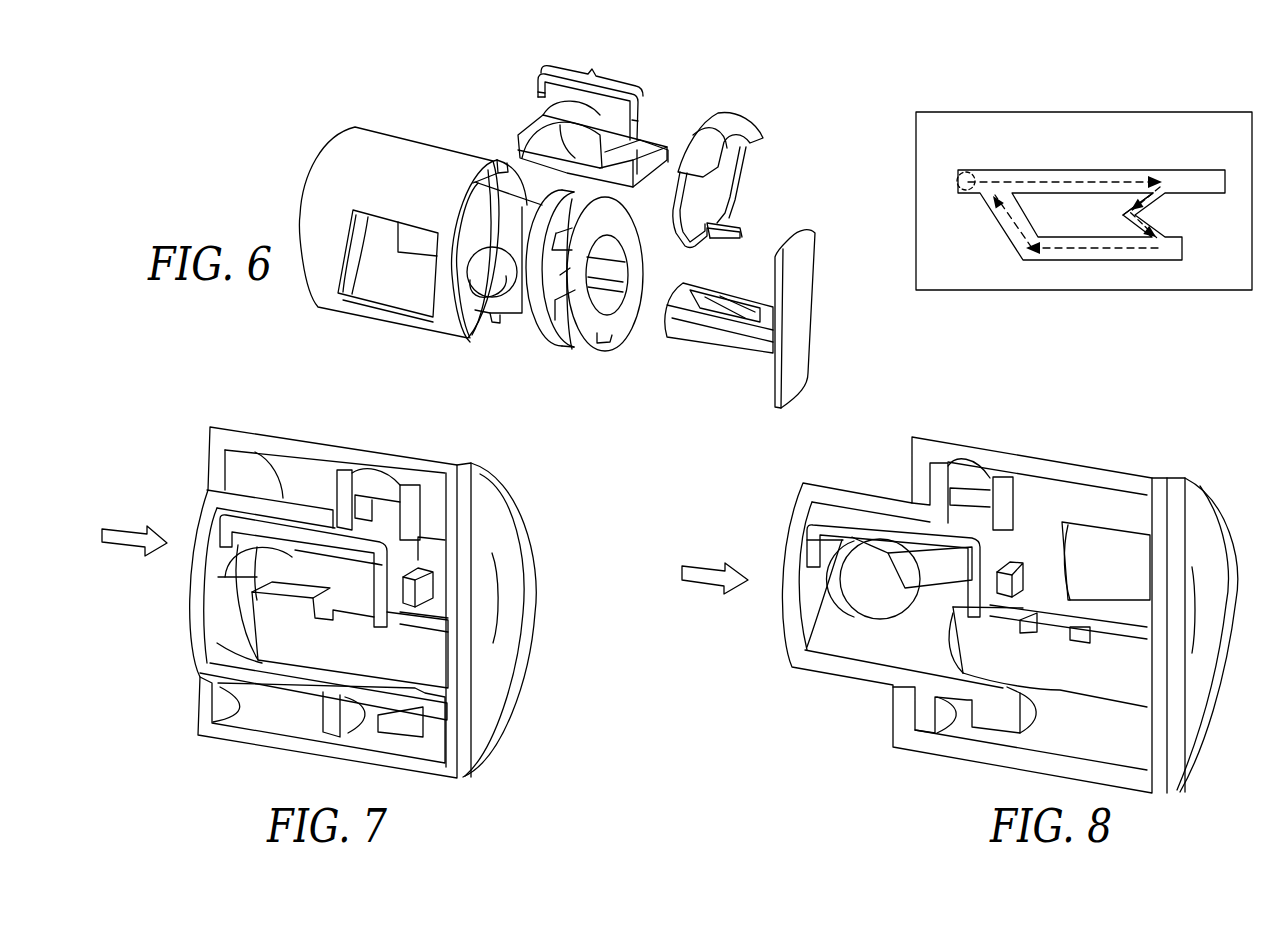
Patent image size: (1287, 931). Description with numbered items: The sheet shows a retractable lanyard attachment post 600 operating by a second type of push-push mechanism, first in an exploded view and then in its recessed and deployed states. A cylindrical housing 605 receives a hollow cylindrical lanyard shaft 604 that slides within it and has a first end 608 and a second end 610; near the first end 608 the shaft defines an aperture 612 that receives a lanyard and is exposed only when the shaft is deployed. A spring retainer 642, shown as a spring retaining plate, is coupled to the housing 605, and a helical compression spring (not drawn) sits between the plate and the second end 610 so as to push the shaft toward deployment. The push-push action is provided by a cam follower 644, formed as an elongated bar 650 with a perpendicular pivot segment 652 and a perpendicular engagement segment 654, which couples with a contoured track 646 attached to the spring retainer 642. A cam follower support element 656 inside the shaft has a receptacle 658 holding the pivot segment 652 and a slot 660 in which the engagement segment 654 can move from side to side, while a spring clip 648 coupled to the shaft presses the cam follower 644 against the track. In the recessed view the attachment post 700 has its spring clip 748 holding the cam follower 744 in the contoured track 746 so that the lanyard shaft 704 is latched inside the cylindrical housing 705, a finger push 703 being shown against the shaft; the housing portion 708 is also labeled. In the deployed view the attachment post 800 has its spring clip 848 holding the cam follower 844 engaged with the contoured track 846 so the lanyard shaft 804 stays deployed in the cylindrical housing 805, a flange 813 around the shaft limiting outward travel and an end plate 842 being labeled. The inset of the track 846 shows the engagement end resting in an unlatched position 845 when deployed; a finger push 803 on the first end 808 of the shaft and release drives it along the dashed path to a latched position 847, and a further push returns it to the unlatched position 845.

In FIG. 6, the retractable lanyard attachment post 600 is at (255, 86).
In FIG. 6, the cylindrical housing 605 is at (330, 146).
In FIG. 6, the first end 608 is at (468, 209).
In FIG. 6, the cylindrical lanyard shaft 604 is at (479, 277).
In FIG. 6, the aperture 612 is at (484, 272).
In FIG. 6, the second end 610 is at (622, 327).
In FIG. 6, the elongated bar 650 is at (554, 74).
In FIG. 6, the cam follower 644 is at (587, 86).
In FIG. 6, the pivot segment 652 is at (535, 86).
In FIG. 6, the engagement segment 654 is at (642, 103).
In FIG. 6, the cam follower support element 656 is at (582, 152).
In FIG. 6, the receptacle 658 is at (587, 139).
In FIG. 6, the slot 660 is at (646, 146).
In FIG. 6, the spring clip 648 is at (753, 118).
In FIG. 6, the contoured track 646 is at (717, 294).
In FIG. 6, the spring retainer 642 is at (808, 327).
In FIG. 6, the contoured track 846 is at (1084, 177).
In FIG. 8, the contoured track 846 is at (1038, 627).
In FIG. 6, the unlatched position 845 is at (972, 175).
In FIG. 6, the latched position 847 is at (1118, 210).
In FIG. 7, the retractable lanyard attachment post 700 is at (145, 432).
In FIG. 7, the cylindrical housing 705 is at (217, 426).
In FIG. 7, the spring clip 748 is at (380, 470).
In FIG. 7, the cam follower 744 is at (305, 520).
In FIG. 7, the finger push 703 is at (110, 527).
In FIG. 7, the lanyard shaft 704 is at (202, 503).
In FIG. 7, the housing 708 is at (190, 633).
In FIG. 7, the contoured track 746 is at (410, 622).
In FIG. 8, the retractable lanyard attachment post 800 is at (757, 480).
In FIG. 8, the cylindrical housing 805 is at (918, 432).
In FIG. 8, the spring clip 848 is at (968, 470).
In FIG. 8, the lanyard shaft 804 is at (822, 480).
In FIG. 8, the cam follower 844 is at (888, 517).
In FIG. 8, the end plate 842 is at (1180, 478).
In FIG. 8, the finger push 803 is at (696, 564).
In FIG. 8, the first end 808 is at (787, 632).
In FIG. 8, the flange 813 is at (913, 716).